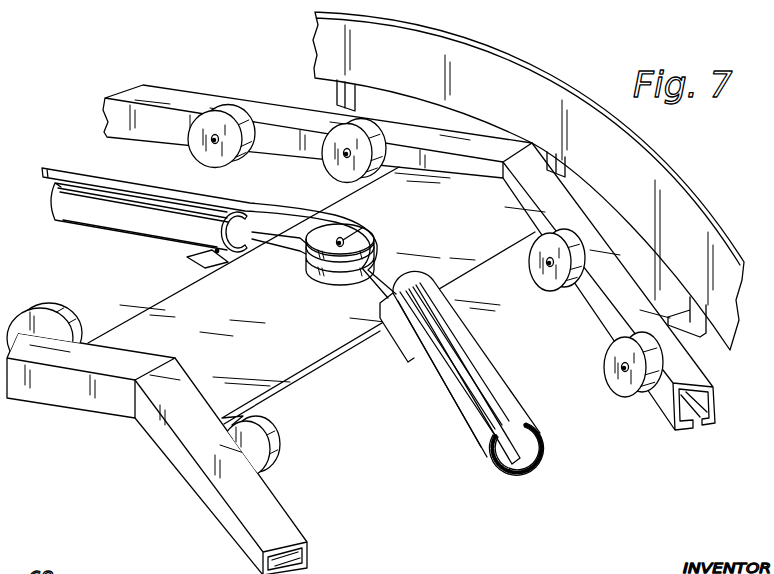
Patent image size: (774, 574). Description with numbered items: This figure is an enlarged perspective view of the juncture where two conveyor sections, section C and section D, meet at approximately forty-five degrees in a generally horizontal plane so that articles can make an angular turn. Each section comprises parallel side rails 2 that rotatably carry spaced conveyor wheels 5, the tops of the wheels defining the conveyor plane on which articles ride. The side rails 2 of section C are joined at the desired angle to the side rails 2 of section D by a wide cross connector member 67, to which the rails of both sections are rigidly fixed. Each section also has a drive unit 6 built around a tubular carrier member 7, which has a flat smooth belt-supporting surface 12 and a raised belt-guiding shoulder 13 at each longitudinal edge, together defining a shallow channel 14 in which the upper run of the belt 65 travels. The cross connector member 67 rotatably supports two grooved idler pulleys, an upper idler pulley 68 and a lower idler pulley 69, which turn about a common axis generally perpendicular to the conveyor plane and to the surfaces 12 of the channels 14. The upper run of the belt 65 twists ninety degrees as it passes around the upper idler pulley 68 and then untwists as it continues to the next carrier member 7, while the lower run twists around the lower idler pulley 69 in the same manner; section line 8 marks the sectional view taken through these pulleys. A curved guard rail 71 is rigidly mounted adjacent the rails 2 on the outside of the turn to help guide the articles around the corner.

The curved guard rail 71 is at (683, 200).
The side rails 2 is at (262, 121).
The conveyor wheels 5 is at (327, 155).
The tubular carrier member 7 is at (56, 203).
The drive unit 6 is at (76, 228).
The belt 65 is at (56, 168).
The shallow channel 14 is at (236, 212).
The belt-supporting surface 12 is at (490, 413).
The belt-guiding shoulder 13 is at (458, 387).
The cross connector member 67 is at (311, 372).
The upper idler pulley 68 is at (369, 238).
The lower idler pulley 69 is at (343, 286).
The section line 8- 8 is at (379, 215).
The section D is at (178, 85).
The section C is at (205, 529).